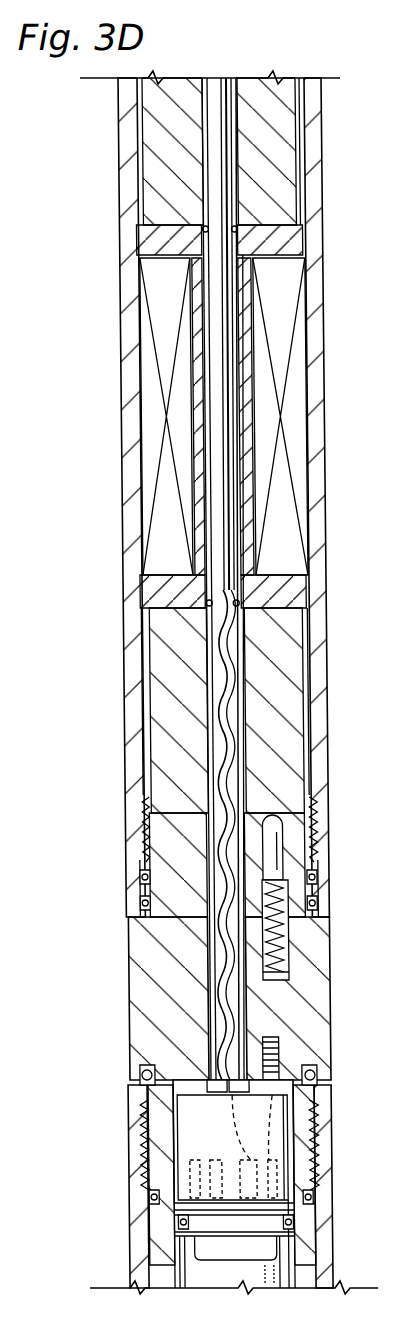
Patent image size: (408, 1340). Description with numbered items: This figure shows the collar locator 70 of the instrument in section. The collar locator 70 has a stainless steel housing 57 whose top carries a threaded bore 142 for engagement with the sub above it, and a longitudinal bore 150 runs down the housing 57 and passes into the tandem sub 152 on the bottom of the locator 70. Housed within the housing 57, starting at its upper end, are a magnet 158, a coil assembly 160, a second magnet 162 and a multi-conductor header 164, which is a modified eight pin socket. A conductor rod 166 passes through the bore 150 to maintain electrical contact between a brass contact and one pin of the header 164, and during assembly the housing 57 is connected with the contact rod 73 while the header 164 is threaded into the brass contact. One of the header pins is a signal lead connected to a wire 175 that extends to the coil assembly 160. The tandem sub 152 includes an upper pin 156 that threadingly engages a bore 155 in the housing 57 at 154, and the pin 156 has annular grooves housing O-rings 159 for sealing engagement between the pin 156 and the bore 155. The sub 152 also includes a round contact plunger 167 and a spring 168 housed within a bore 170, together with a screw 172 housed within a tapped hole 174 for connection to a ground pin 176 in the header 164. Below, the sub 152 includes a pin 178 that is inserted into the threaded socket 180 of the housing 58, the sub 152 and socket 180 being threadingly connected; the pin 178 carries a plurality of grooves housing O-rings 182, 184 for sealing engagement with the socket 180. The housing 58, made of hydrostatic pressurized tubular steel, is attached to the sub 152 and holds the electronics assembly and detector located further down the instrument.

The housing 57 is at (125, 327).
The threaded bore 142 is at (311, 137).
The magnet 158 is at (276, 185).
The longitudinal bore 150 is at (211, 760).
The conductor rod 166 is at (218, 285).
The contact rod 73 is at (211, 745).
The wire 175 is at (213, 987).
The coil assembly 160 is at (337, 257).
The collar locator 70 is at (157, 550).
The magnet 162 is at (279, 645).
The upper pin 156 is at (158, 830).
The tandem sub 152 is at (321, 982).
The bore 155 is at (137, 853).
The threaded engagement location 154 is at (310, 835).
The O-rings 159 is at (132, 905).
The round contact plunger 167 is at (265, 850).
The bore 170 is at (278, 965).
The spring 168 is at (266, 935).
The tapped hole 174 is at (262, 1050).
The screw 172 is at (265, 1085).
The pin 178 is at (150, 1115).
The ground pin 176 is at (262, 1108).
The housing 58 is at (312, 1120).
The O-ring 182 is at (130, 1076).
The threaded socket 180 is at (139, 1178).
The O-ring 184 is at (147, 1200).
The multi-conductor header 164 is at (208, 1222).